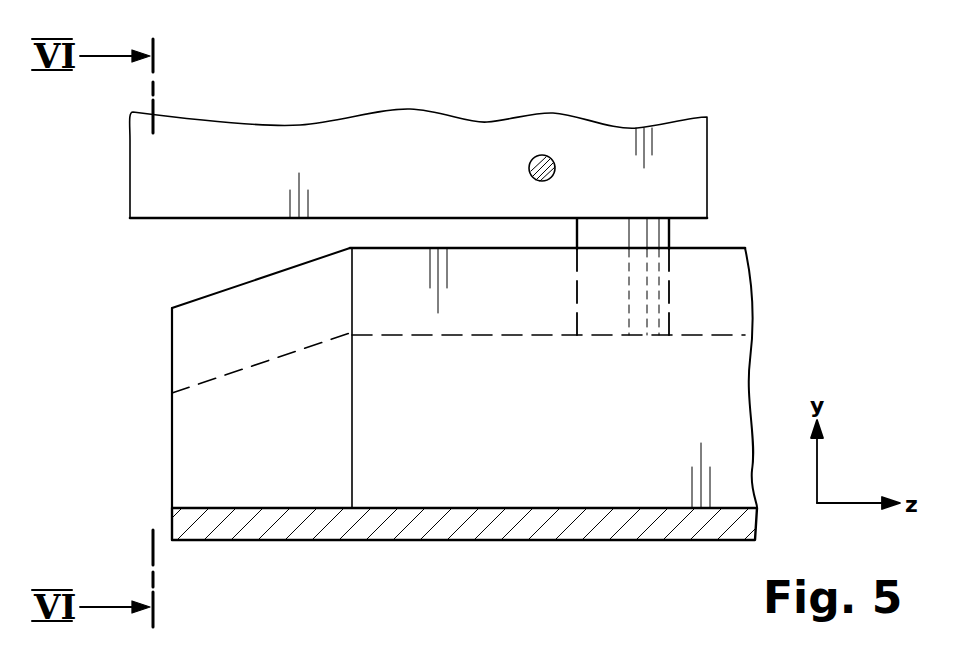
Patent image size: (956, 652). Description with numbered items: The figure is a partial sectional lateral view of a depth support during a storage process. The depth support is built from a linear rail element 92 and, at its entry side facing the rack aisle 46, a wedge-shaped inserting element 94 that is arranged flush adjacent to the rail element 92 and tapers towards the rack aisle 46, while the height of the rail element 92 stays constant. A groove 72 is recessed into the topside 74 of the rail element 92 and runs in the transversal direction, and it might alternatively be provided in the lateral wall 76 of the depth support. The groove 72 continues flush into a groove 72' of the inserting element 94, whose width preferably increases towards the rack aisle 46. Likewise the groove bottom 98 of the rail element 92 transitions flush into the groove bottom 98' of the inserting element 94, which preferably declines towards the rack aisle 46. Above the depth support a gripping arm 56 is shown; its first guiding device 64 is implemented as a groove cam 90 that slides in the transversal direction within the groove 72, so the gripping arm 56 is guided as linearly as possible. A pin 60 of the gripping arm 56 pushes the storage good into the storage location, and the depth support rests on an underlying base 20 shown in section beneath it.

The gripping arm 56 is at (241, 100).
The pin 60 is at (540, 155).
The rail element 92 is at (484, 230).
The topside 74 is at (381, 246).
The first guiding device 64 is at (656, 210).
The groove cam 90 is at (669, 232).
The groove 72 is at (510, 378).
The groove of the inserting element 72' is at (211, 378).
The inserting element 94 is at (168, 455).
The groove bottom 98 is at (548, 372).
The groove bottom of the inserting element 98' is at (261, 384).
The lateral wall 76 is at (561, 417).
The rack aisle 46 is at (84, 535).
The base plate 20 is at (430, 542).